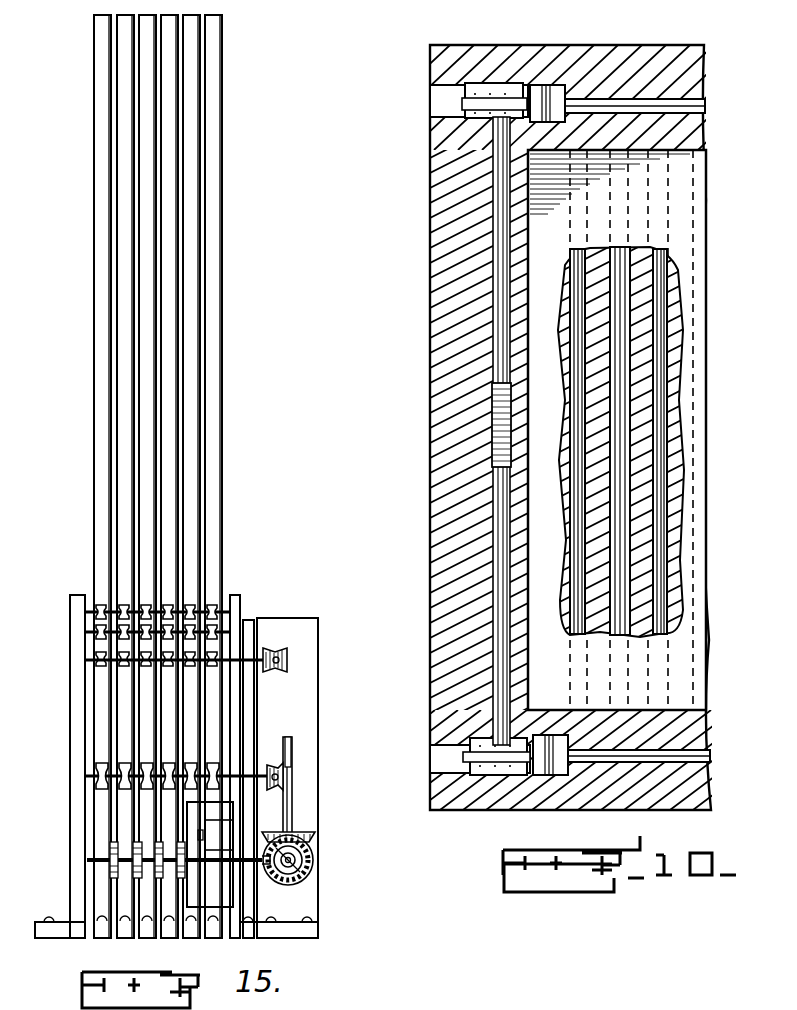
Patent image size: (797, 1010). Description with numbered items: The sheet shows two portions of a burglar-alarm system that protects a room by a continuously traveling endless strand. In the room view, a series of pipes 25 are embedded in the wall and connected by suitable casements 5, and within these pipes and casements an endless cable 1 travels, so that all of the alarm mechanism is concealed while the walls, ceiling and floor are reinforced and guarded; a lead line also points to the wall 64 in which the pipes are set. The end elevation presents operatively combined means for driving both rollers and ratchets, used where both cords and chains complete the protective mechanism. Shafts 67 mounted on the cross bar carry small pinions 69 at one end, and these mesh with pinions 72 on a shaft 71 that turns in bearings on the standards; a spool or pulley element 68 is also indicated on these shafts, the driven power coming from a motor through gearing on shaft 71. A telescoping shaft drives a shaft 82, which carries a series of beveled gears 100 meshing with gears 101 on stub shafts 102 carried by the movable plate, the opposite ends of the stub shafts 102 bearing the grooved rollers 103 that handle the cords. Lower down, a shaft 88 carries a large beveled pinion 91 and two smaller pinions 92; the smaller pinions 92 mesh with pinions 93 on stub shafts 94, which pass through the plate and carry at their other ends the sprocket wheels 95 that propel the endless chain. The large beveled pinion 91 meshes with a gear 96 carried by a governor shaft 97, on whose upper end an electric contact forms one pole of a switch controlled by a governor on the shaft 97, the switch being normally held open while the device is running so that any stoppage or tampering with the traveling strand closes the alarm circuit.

In FIG. 10, the endless cable 1 is at (497, 440).
In FIG. 10, the casements 5 is at (556, 88).
In FIG. 10, the pipes 25 is at (575, 300).
In FIG. 10, the wall 64 is at (452, 420).
In FIG. 15, the shafts 67 is at (88, 660).
In FIG. 15, the pulleys 68 is at (110, 650).
In FIG. 15, the small pinions 69 is at (273, 652).
In FIG. 15, the shaft 71 is at (280, 666).
In FIG. 15, the pinions 72 is at (282, 657).
In FIG. 15, the shaft 82 is at (283, 772).
In FIG. 15, the shaft 88 is at (312, 868).
In FIG. 15, the large beveled pinion 91 is at (296, 870).
In FIG. 15, the smaller pinions 92 is at (308, 861).
In FIG. 15, the pinions 93 is at (281, 880).
In FIG. 15, the stub shafts 94 is at (90, 856).
In FIG. 15, the sprocket wheels 95 is at (135, 868).
In FIG. 15, the gear 96 is at (316, 838).
In FIG. 15, the governor shaft 97 is at (293, 822).
In FIG. 15, the beveled gears 100 is at (291, 748).
In FIG. 15, the gears 101 is at (285, 787).
In FIG. 15, the stub shafts 102 is at (90, 772).
In FIG. 15, the grooved rollers 103 is at (125, 786).